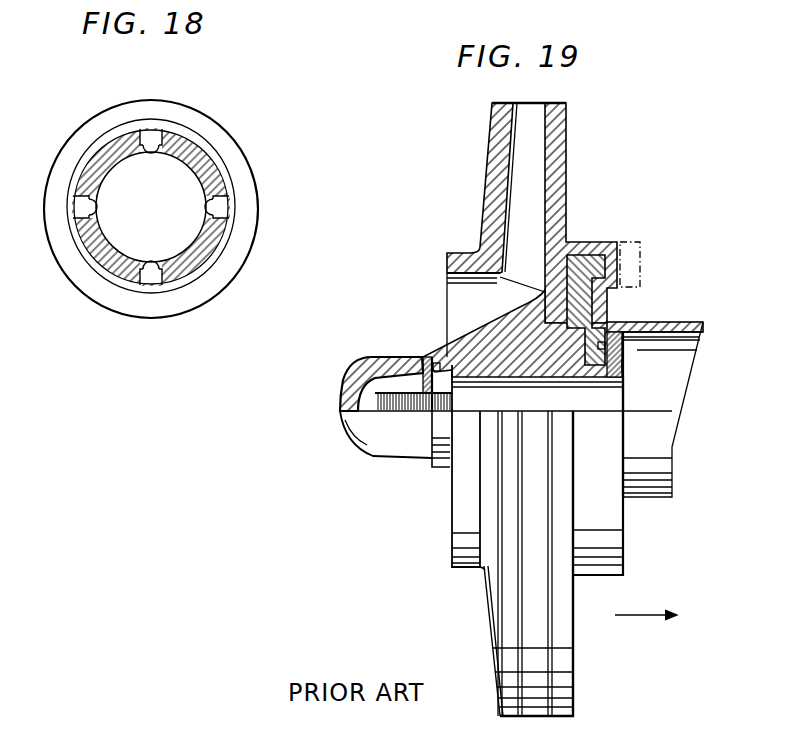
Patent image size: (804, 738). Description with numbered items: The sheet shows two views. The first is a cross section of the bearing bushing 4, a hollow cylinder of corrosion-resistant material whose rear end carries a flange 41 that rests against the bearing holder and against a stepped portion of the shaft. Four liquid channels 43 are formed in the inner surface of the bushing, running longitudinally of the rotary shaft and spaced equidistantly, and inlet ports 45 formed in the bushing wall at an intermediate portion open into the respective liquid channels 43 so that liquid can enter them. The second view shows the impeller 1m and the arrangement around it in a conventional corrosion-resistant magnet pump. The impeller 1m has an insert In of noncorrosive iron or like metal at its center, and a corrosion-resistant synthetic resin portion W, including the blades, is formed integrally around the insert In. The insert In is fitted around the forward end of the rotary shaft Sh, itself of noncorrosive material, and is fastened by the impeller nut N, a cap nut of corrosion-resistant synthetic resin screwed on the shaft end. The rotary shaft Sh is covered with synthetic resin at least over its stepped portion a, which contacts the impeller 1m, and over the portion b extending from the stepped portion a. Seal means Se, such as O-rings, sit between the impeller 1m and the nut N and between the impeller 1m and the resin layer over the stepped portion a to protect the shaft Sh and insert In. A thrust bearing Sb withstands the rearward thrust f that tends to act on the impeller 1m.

In FIG. 18, the bearing bushing 4 is at (80, 116).
In FIG. 18, the flange 41 is at (241, 173).
In FIG. 18, the liquid channels 43 is at (146, 150).
In FIG. 18, the inlet ports 45 is at (152, 134).
In FIG. 19, the synthetic resin portion W is at (567, 158).
In FIG. 19, the thrust bearing Sb is at (637, 240).
In FIG. 19, the insert In is at (608, 300).
In FIG. 19, the seal means Se is at (625, 319).
In FIG. 19, the impeller nut N is at (395, 357).
In FIG. 19, the stepped portion a is at (623, 367).
In FIG. 19, the portion extending from the stepped portion b is at (697, 350).
In FIG. 19, the rotary shaft Sh is at (607, 393).
In FIG. 19, the impeller 1m is at (484, 609).
In FIG. 19, the thrust f is at (636, 617).